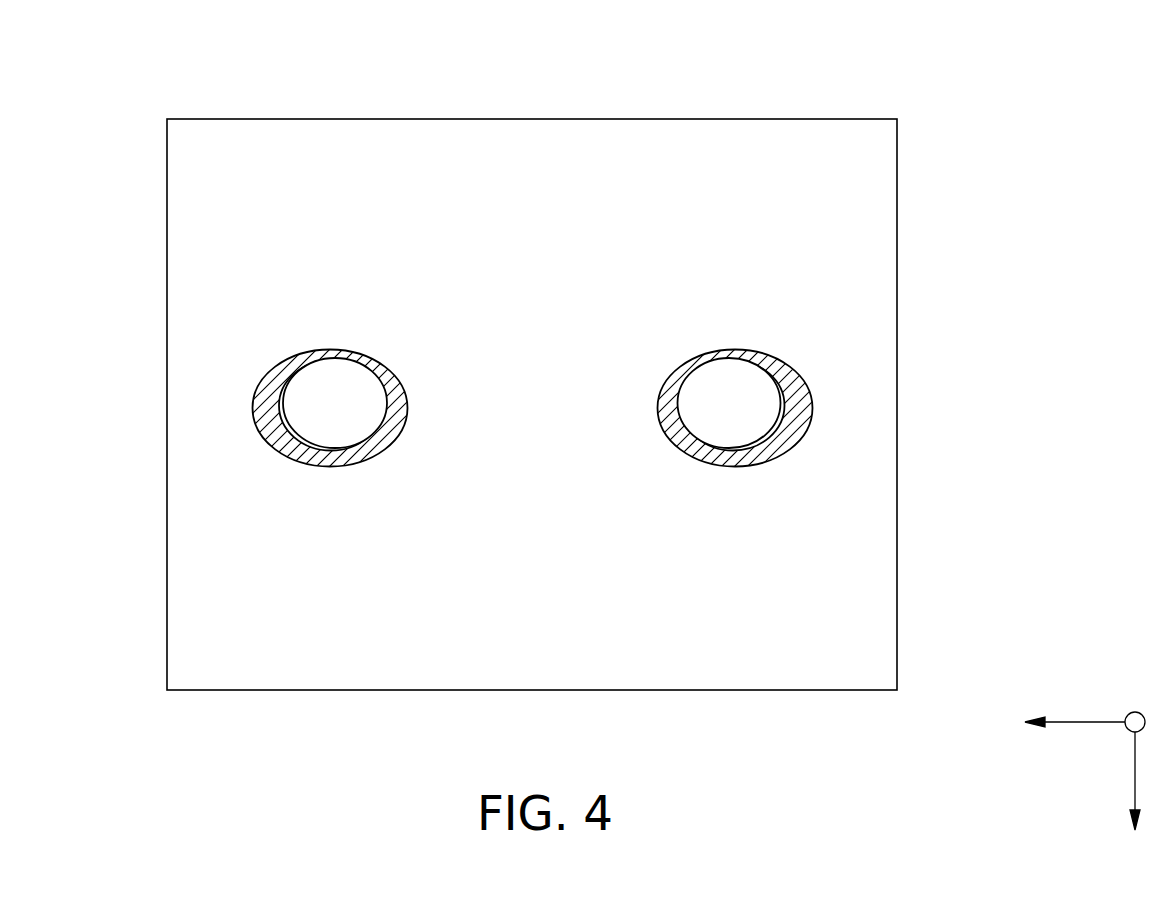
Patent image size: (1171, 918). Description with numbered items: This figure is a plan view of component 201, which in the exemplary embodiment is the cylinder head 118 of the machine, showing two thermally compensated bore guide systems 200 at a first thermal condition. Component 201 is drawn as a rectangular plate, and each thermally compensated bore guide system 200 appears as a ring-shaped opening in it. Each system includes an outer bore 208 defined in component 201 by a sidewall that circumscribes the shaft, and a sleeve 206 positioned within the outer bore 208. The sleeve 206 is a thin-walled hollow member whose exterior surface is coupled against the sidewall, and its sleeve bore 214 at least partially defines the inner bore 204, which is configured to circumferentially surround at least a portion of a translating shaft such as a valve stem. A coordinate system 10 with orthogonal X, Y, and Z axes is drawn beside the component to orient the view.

The coordinate system 10 is at (1108, 742).
The cylinder head 118 is at (470, 392).
The component 201 is at (199, 170).
The thermally compensated bore guide system 200 is at (245, 190).
The inner bore 204 is at (345, 367).
The sleeve 206 is at (258, 410).
The outer bore 208 is at (257, 342).
The sleeve bore 214 is at (316, 323).